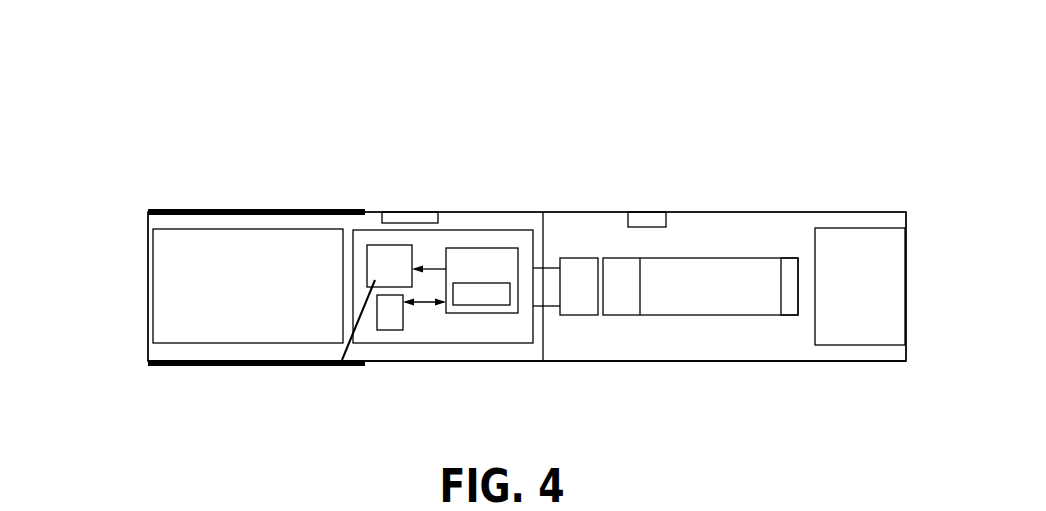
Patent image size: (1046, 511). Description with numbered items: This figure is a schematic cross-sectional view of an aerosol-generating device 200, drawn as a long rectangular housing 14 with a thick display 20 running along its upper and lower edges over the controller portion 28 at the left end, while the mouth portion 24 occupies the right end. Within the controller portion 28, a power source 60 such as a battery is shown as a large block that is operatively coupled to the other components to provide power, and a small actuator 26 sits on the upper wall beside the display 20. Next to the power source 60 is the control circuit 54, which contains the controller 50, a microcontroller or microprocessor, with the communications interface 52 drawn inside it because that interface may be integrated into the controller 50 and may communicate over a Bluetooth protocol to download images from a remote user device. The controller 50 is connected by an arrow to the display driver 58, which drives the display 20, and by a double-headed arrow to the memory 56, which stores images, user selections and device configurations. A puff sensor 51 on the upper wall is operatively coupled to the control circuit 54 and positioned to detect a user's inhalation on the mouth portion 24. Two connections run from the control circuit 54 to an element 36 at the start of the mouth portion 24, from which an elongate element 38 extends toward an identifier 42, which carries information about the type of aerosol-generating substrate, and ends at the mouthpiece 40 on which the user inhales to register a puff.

The electronic device 200 is at (316, 110).
The housing 14 is at (146, 203).
The display 20 is at (252, 207).
The controller portion 28 is at (147, 374).
The mouth portion 24 is at (848, 372).
The power source 60 is at (259, 290).
The control circuit 54 is at (462, 340).
The actuator 26 is at (421, 211).
The display driver 58 is at (378, 248).
The memory 56 is at (388, 305).
The controller 50 is at (487, 257).
The communications interface 52 is at (462, 285).
The motor 36 is at (572, 248).
The puff sensor 51 is at (650, 222).
The drive shaft 38 is at (689, 248).
The identifier 42 is at (785, 248).
The mouthpiece 40 is at (860, 243).